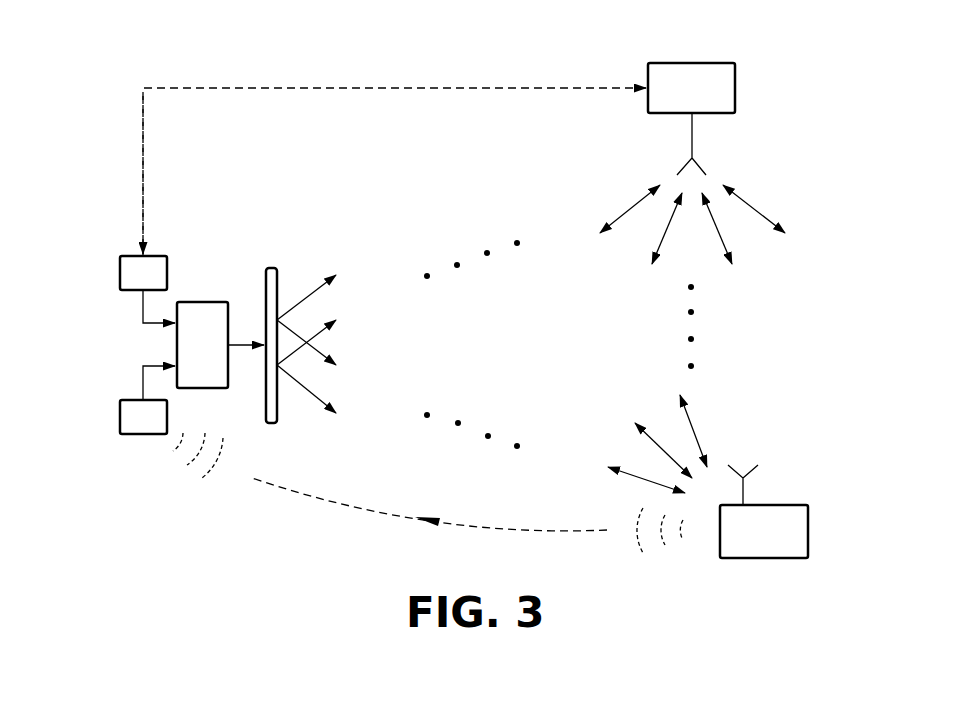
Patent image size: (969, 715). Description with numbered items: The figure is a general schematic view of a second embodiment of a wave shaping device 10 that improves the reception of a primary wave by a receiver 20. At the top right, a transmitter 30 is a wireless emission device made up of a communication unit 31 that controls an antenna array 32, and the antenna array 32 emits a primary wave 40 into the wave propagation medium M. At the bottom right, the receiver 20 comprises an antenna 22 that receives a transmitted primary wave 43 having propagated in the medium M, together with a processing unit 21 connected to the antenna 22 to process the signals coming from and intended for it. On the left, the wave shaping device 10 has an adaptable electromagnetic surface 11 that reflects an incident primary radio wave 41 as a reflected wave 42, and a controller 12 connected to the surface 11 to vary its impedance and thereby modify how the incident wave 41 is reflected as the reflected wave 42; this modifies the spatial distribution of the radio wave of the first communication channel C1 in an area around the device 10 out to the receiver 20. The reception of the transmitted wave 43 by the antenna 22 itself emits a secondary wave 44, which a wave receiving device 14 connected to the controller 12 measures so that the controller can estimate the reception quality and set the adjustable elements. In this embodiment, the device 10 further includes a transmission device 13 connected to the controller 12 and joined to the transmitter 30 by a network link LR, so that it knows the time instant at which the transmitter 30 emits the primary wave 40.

The wave shaping device 10 is at (194, 401).
The adaptable electromagnetic surface 11 is at (265, 282).
The controller 12 is at (205, 302).
The transmission device 13 is at (120, 268).
The wave receiving device 14 is at (120, 425).
The receiver 20 is at (745, 535).
The processing unit 21 is at (808, 545).
The antenna 22 is at (745, 490).
The transmitter 30 is at (707, 202).
The communication unit 31 is at (735, 75).
The antenna array 32 is at (694, 149).
The primary wave 40 is at (630, 205).
The incident primary radio wave 41 is at (312, 292).
The reflected wave 42 is at (310, 400).
The transmitted primary wave 43 is at (692, 423).
The secondary wave 44 is at (328, 503).
The first communication channel C1 is at (485, 251).
The wave propagation medium M is at (573, 353).
The network link LR is at (237, 86).